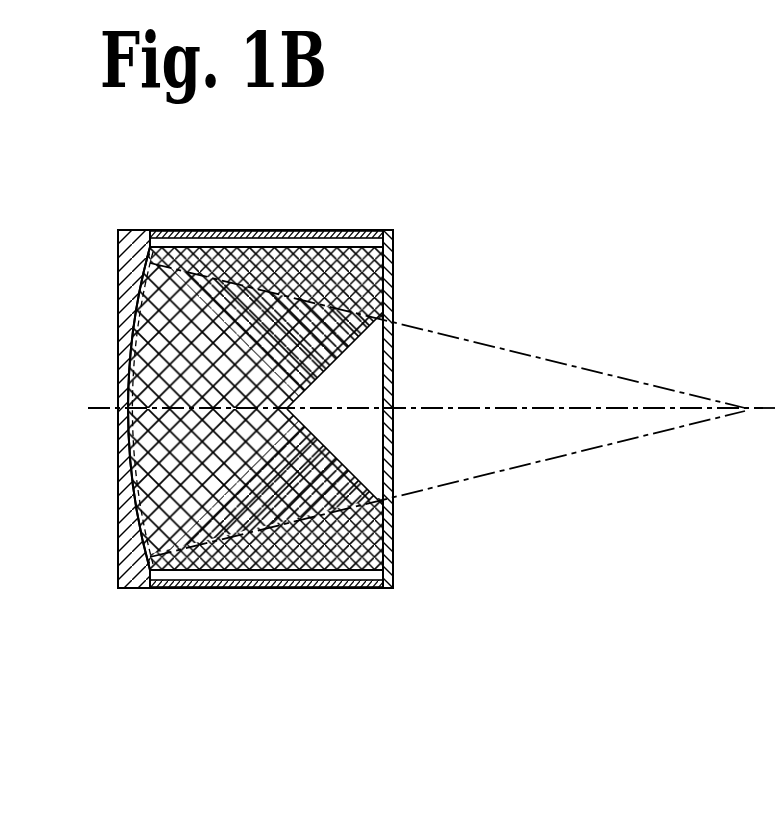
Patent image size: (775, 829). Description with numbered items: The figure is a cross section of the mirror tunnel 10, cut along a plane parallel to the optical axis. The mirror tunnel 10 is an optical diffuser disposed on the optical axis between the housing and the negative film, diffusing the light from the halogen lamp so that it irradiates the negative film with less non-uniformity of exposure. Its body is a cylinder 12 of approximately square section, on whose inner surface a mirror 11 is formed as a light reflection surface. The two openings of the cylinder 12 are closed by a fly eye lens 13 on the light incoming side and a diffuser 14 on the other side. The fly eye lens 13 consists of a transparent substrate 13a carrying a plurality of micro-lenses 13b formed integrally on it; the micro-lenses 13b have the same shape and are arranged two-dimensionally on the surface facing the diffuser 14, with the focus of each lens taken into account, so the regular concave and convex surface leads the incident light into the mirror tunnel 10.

The mirror tunnel 10 is at (308, 196).
The mirror 11 is at (233, 246).
The cylinder 12 is at (356, 234).
The fly eye lens 13 is at (125, 226).
The transparent substrate 13a is at (124, 524).
The micro-lenses 13b is at (176, 262).
The diffuser 14 is at (394, 280).